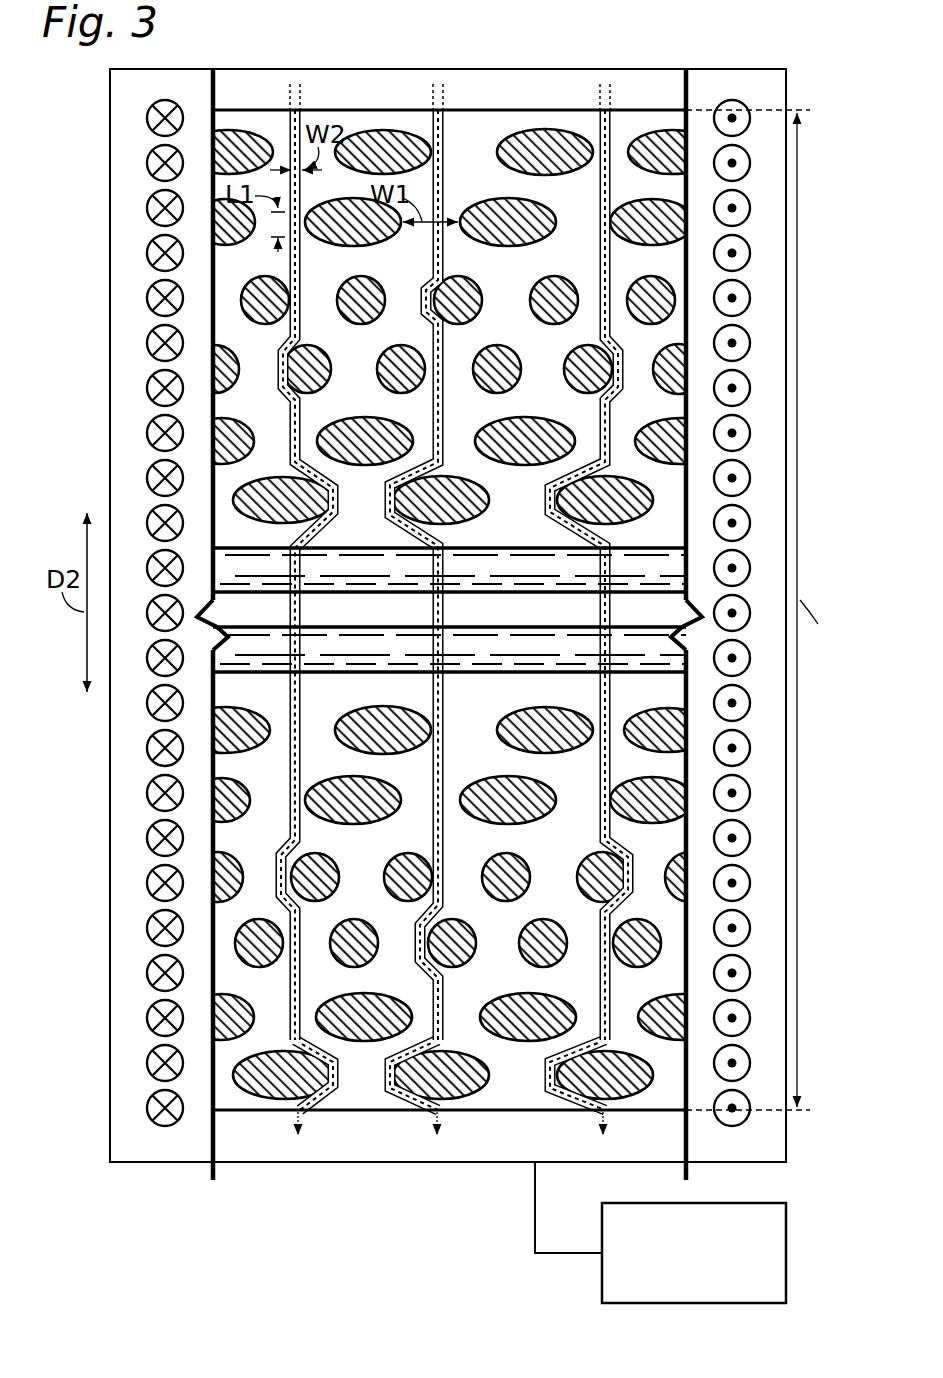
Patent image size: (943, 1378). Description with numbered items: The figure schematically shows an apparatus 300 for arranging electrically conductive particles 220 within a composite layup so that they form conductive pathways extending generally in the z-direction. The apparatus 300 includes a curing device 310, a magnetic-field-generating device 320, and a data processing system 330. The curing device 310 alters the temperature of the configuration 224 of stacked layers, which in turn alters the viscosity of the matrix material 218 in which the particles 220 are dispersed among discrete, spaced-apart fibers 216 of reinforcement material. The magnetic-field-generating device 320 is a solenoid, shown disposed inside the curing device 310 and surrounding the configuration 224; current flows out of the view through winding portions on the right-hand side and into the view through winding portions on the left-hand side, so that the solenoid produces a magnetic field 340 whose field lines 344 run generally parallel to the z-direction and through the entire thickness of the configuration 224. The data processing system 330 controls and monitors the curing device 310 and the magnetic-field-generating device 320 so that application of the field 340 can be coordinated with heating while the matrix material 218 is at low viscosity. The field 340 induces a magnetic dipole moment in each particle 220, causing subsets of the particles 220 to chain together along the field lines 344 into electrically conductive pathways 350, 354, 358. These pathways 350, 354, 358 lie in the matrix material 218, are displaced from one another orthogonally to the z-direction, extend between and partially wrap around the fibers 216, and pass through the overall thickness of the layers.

The apparatus 300 is at (236, 38).
The curing device 310 is at (718, 68).
The magnetic-field-generating device 320 is at (160, 94).
The data processing system 330 is at (726, 1203).
The magnetic field 340 is at (612, 100).
The field lines 344 is at (600, 98).
The electrically conductive pathway 350 is at (339, 1097).
The electrically conductive pathway 354 is at (381, 1098).
The electrically conductive pathway 358 is at (541, 1098).
The fibers 216 is at (375, 150).
The matrix material 218 is at (474, 125).
The electrically conductive particles 220 is at (300, 300).
The configuration 224 is at (248, 110).